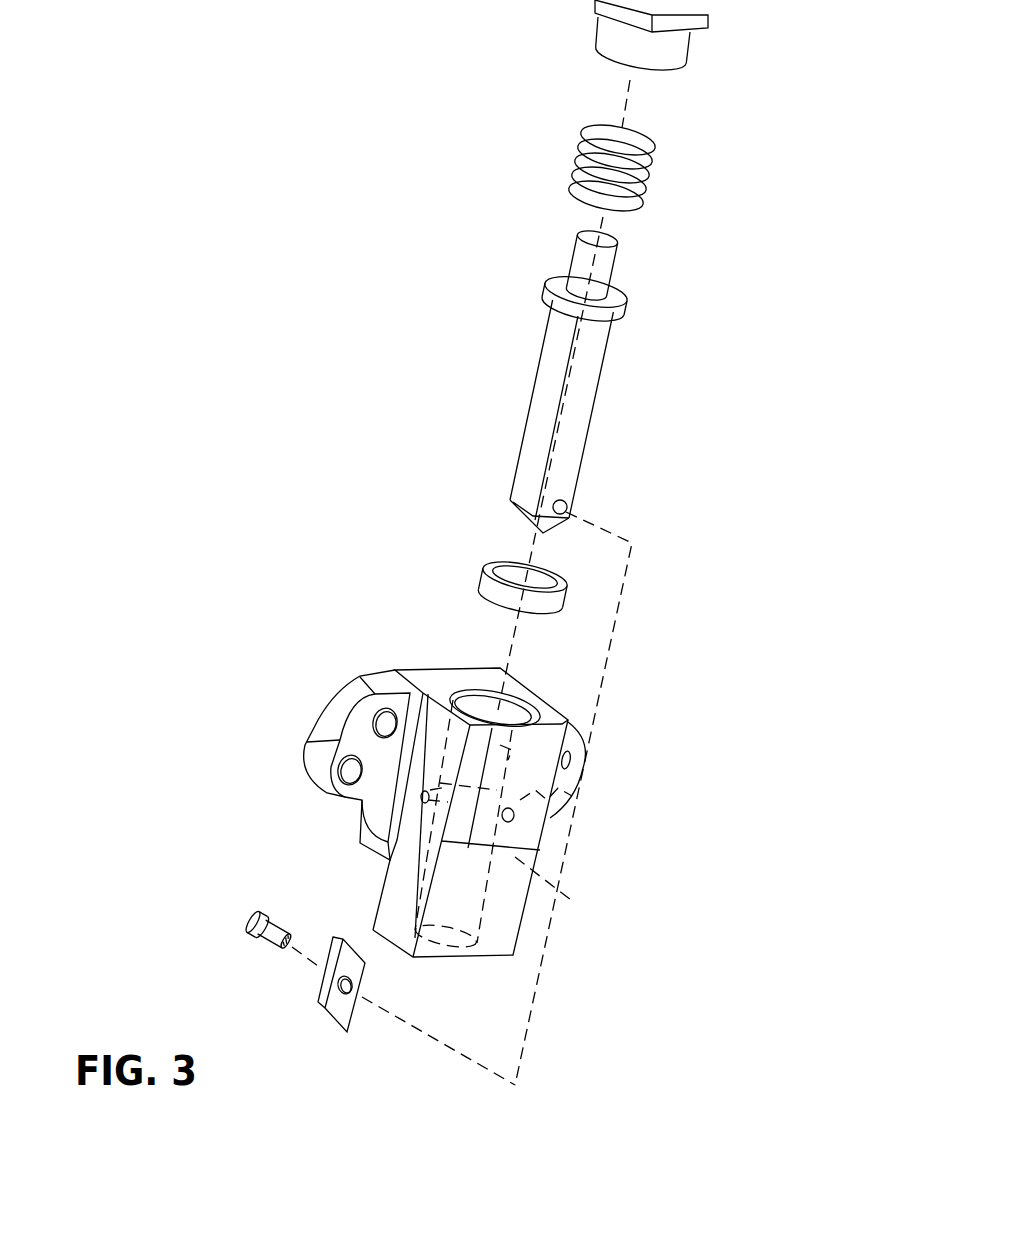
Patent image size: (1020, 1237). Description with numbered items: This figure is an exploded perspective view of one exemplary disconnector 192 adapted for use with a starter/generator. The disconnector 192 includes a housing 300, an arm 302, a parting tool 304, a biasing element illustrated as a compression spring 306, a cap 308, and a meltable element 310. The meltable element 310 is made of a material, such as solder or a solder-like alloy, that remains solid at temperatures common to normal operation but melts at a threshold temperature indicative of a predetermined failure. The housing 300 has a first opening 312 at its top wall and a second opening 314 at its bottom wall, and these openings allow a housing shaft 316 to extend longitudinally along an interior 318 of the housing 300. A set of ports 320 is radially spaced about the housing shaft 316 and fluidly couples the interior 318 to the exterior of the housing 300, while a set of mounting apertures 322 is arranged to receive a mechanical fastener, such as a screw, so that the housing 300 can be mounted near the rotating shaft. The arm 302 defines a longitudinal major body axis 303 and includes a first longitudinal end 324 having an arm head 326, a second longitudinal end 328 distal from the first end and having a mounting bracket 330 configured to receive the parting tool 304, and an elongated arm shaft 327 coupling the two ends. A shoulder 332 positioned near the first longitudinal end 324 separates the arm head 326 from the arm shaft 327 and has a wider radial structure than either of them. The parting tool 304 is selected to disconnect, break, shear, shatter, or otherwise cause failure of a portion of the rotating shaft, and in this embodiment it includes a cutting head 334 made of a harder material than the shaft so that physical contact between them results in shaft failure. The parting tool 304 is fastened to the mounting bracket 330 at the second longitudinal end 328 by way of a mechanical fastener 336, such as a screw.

The disconnector 192 is at (398, 110).
The housing 300 is at (458, 842).
The arm 302 is at (561, 437).
The longitudinal major body axis 303 is at (578, 366).
The parting tool 304 is at (355, 1017).
The compression spring 306 is at (647, 160).
The cap 308 is at (712, 25).
The meltable element 310 is at (489, 588).
The first opening 312 is at (508, 700).
The second opening 314 is at (448, 960).
The housing shaft 316 is at (503, 846).
The interior 318 is at (523, 746).
The set of ports 320 is at (513, 797).
The set of mounting apertures 322 is at (352, 757).
The first longitudinal end 324 is at (571, 394).
The arm head 326 is at (604, 263).
The arm shaft 327 is at (542, 402).
The second longitudinal end 328 is at (576, 534).
The mounting bracket 330 is at (530, 518).
The shoulder 332 is at (618, 310).
The cutting head 334 is at (349, 1034).
The mechanical fastener 336 is at (250, 926).